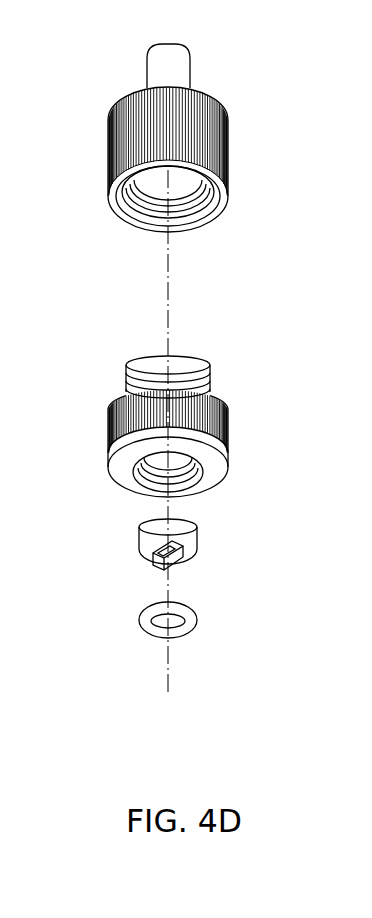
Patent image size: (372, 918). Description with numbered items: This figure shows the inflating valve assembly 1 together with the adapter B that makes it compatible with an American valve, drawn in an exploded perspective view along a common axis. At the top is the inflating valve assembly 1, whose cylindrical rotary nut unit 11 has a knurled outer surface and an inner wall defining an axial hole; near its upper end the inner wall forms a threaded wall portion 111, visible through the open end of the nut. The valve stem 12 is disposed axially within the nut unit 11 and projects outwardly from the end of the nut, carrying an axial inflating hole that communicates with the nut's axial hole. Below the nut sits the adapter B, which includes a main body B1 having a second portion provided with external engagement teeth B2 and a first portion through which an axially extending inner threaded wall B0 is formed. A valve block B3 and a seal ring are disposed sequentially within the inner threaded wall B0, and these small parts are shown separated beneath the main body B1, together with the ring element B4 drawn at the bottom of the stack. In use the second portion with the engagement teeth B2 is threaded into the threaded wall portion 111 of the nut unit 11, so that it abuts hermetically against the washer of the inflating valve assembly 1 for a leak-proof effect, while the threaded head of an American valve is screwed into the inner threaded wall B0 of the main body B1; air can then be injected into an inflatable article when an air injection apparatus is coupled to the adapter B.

The inflating valve assembly 1 is at (169, 151).
The rotary nut unit 11 is at (126, 133).
The threaded wall portion 111 is at (147, 207).
The valve stem 12 is at (180, 72).
The adapter B is at (155, 432).
The inner threaded wall B0 is at (148, 473).
The main body B1 is at (224, 433).
The external engagement teeth B2 is at (211, 385).
The valve block B3 is at (190, 535).
The washer B4 is at (190, 615).